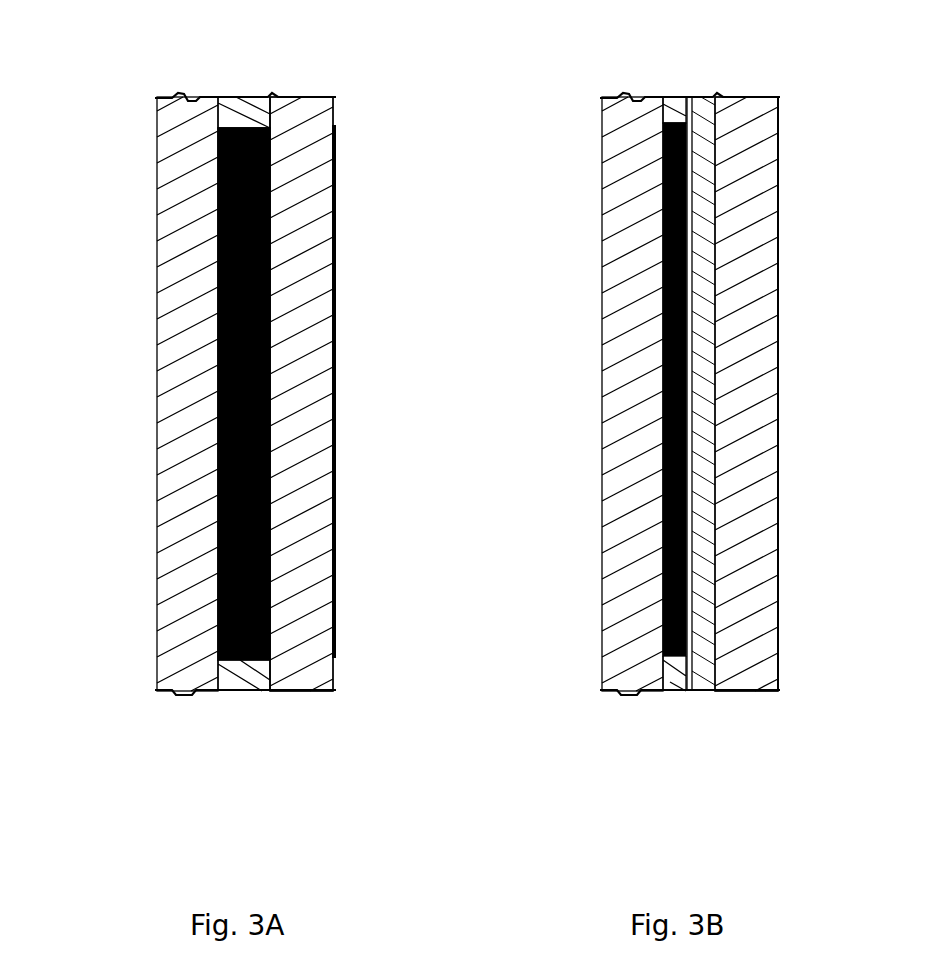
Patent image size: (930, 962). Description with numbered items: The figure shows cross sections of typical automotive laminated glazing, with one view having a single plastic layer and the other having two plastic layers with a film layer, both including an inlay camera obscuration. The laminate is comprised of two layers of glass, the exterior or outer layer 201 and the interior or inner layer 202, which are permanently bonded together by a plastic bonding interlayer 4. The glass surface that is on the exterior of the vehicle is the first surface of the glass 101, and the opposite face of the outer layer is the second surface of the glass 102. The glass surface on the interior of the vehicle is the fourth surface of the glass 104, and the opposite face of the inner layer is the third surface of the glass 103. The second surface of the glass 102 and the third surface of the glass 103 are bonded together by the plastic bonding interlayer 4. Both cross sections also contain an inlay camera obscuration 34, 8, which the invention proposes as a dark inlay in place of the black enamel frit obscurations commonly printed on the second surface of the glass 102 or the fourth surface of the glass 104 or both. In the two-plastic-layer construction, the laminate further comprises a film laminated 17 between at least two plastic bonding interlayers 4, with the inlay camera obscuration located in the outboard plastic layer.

In FIG. 3A, the first surface of the glass 101 is at (155, 167).
In FIG. 3B, the first surface of the glass 101 is at (600, 167).
In FIG. 3A, the second surface of the glass 102 is at (212, 111).
In FIG. 3B, the second surface of the glass 102 is at (660, 112).
In FIG. 3A, the third surface of the glass 103 is at (275, 119).
In FIG. 3B, the third surface of the glass 103 is at (720, 119).
In FIG. 3A, the fourth surface of the glass 104 is at (335, 683).
In FIG. 3B, the fourth surface of the glass 104 is at (780, 681).
In FIG. 3A, the outer layer of glass 201 is at (143, 270).
In FIG. 3B, the outer layer of glass 201 is at (588, 331).
In FIG. 3A, the inner layer of glass 202 is at (350, 343).
In FIG. 3B, the inner layer of glass 202 is at (783, 264).
In FIG. 3A, the inlay camera obscuration 34 is at (277, 338).
In FIG. 3A, the inlay camera obscuration 8 is at (335, 394).
In FIG. 3B, the inlay camera obscuration 8 is at (661, 521).
In FIG. 3A, the plastic bonding interlayer 4 is at (224, 694).
In FIG. 3B, the plastic bonding interlayer 4 is at (702, 697).
In FIG. 3B, the film laminated 17 is at (685, 95).